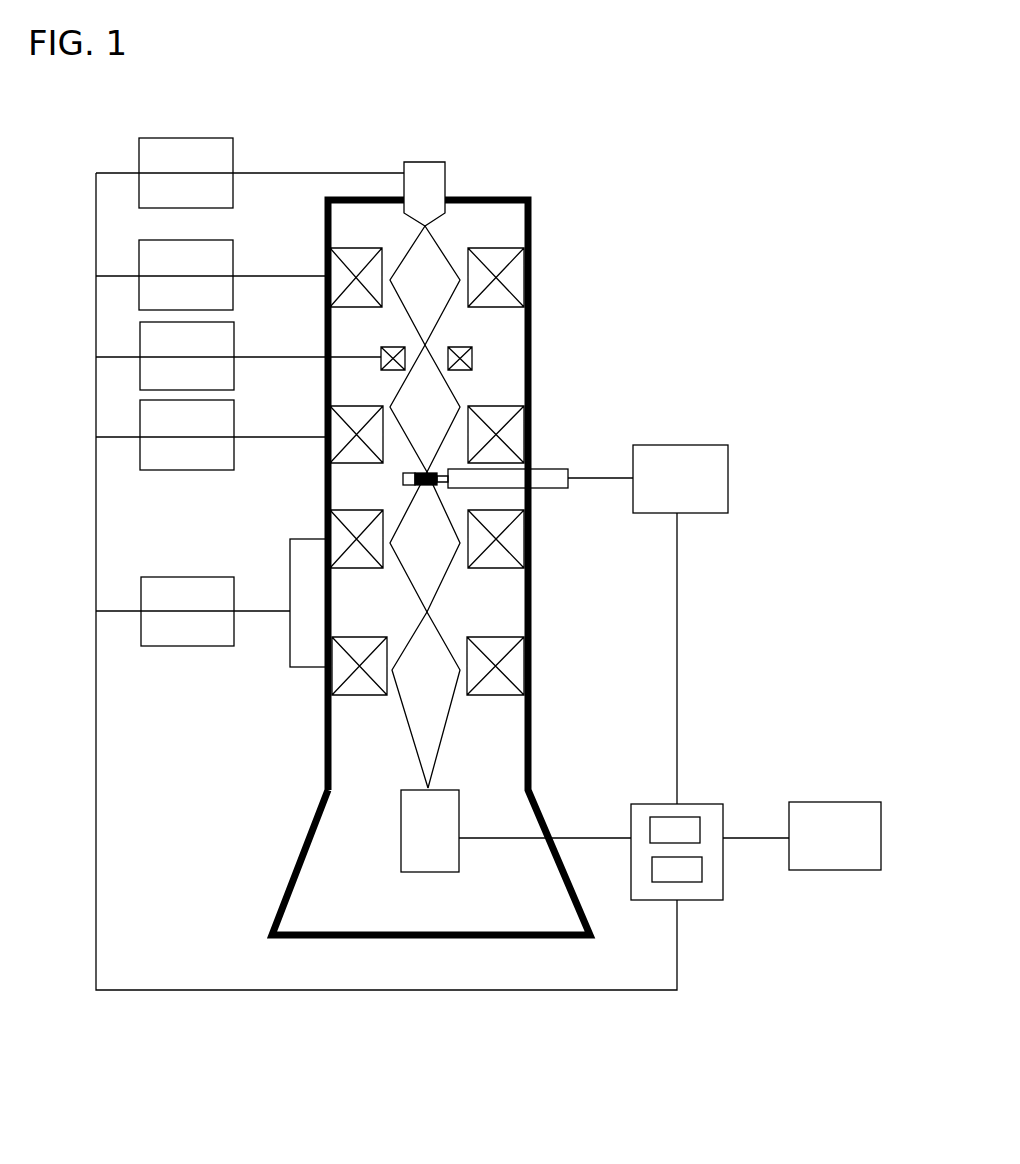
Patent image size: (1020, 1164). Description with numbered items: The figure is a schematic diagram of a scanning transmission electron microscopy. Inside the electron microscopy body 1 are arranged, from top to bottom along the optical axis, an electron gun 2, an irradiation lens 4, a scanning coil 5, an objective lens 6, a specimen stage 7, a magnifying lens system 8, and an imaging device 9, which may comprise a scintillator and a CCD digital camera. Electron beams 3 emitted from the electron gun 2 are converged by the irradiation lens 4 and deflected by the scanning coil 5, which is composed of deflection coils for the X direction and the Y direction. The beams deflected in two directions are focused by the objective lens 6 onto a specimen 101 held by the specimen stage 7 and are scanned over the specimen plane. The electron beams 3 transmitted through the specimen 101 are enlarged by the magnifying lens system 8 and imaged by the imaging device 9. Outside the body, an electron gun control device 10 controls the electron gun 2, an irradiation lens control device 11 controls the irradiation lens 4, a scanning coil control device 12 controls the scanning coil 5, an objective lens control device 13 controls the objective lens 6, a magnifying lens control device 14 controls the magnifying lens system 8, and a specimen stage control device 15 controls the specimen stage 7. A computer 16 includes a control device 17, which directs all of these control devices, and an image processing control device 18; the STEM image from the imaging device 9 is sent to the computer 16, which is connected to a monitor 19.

The electron microscopy body 1 is at (532, 222).
The electron gun 2 is at (425, 162).
The electron beams 3 is at (442, 243).
The irradiation lens 4 is at (524, 276).
The scanning coil 5 is at (472, 357).
The objective lens 6 is at (522, 432).
The specimen stage 7 is at (557, 468).
The magnifying lens system 8 is at (527, 540).
The imaging device 9 is at (459, 818).
The electron gun control device 10 is at (233, 152).
The irradiation lens control device 11 is at (233, 253).
The scanning coil control device 12 is at (234, 335).
The objective lens control device 13 is at (234, 413).
The magnifying lens control device 14 is at (188, 577).
The specimen stage control device 15 is at (683, 445).
The computer 16 is at (695, 804).
The control device 17 is at (663, 817).
The image processing control device 18 is at (690, 882).
The monitor 19 is at (835, 802).
The specimen 101 is at (413, 485).